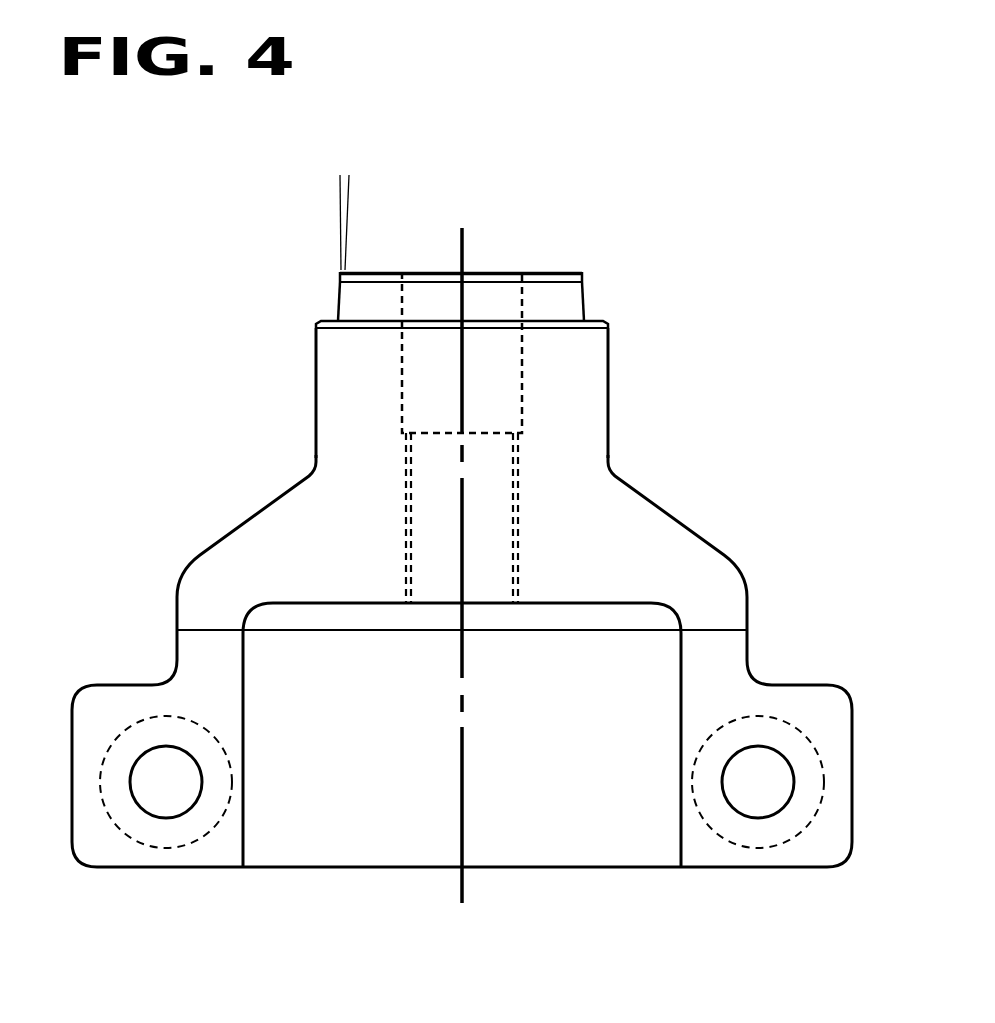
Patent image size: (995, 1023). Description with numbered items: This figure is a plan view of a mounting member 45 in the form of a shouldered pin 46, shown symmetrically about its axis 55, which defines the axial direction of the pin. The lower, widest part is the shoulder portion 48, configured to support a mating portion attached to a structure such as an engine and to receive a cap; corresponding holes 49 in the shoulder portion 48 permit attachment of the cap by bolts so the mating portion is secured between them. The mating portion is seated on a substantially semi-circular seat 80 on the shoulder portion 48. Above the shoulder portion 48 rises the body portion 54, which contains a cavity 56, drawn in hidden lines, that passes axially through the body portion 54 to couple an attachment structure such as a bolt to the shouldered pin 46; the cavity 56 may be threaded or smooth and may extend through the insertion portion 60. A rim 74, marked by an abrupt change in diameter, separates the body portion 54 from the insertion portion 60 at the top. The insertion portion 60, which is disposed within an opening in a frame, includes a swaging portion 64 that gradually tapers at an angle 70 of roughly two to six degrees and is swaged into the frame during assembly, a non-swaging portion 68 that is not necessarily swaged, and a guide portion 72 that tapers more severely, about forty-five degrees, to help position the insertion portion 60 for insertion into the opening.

The mounting member 45 is at (648, 441).
The shouldered pin 46 is at (180, 341).
The shoulder portion 48 is at (297, 685).
The holes 49 is at (157, 753).
The body portion 54 is at (330, 350).
The axis 55 is at (463, 883).
The cavity 56 is at (452, 397).
The insertion portion 60 is at (350, 295).
The swaging portion 64 is at (560, 300).
The non-swaging portion 68 is at (538, 278).
The angle 70 is at (350, 196).
The guide portion 72 is at (440, 272).
The rim 74 is at (330, 317).
The semi-circular seat 80 is at (660, 643).